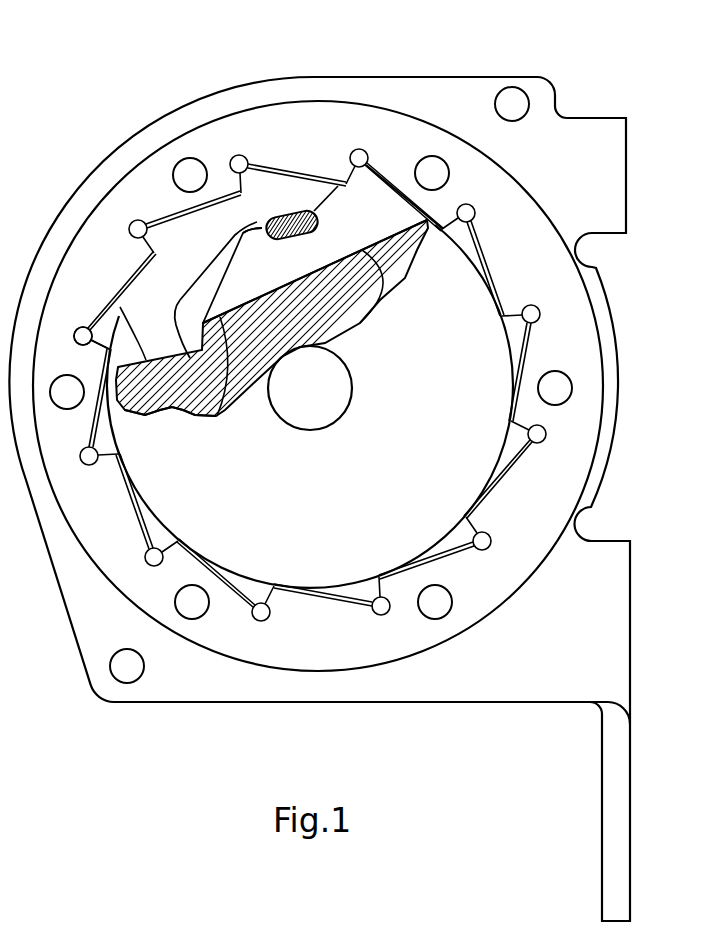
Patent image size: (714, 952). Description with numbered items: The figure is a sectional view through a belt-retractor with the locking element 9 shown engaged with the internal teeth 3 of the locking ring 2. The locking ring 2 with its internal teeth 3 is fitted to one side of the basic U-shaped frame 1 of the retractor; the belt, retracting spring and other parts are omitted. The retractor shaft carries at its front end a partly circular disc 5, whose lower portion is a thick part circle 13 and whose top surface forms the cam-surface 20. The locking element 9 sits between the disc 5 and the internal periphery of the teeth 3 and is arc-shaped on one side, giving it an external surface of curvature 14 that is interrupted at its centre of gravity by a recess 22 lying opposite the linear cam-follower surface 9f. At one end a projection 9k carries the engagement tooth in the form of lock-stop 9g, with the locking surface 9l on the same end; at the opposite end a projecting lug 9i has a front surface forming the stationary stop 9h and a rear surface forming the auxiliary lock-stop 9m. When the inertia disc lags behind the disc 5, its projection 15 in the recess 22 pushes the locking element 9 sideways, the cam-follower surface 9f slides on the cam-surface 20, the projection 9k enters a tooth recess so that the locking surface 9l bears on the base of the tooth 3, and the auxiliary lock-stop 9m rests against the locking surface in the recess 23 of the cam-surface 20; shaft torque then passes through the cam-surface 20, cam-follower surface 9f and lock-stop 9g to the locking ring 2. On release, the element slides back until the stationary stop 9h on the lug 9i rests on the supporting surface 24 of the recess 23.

The frame 1 is at (412, 681).
The locking ring 2 is at (340, 659).
The internal teeth 3 is at (146, 530).
The partly circular disc 5 is at (310, 406).
The thick part circle 13 is at (410, 504).
The locking element 9 is at (293, 265).
The cam-follower surface 9f is at (363, 252).
The lock-stop 9g is at (356, 170).
The stationary stop 9h is at (176, 336).
The projecting lug 9i is at (190, 337).
The projection 9k is at (380, 167).
The locking surface 9l is at (400, 187).
The auxiliary lock-stop 9m is at (217, 413).
The external surface of curvature 14 is at (207, 267).
The projection 15 is at (285, 213).
The cam-surface 20 is at (330, 322).
The recess 22 is at (249, 243).
The recess 23 is at (120, 307).
The supporting surface 24 is at (98, 326).